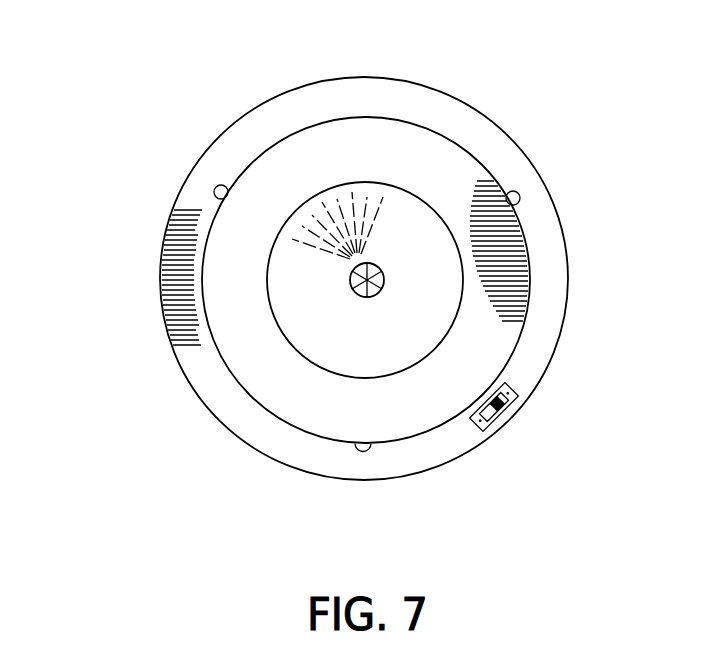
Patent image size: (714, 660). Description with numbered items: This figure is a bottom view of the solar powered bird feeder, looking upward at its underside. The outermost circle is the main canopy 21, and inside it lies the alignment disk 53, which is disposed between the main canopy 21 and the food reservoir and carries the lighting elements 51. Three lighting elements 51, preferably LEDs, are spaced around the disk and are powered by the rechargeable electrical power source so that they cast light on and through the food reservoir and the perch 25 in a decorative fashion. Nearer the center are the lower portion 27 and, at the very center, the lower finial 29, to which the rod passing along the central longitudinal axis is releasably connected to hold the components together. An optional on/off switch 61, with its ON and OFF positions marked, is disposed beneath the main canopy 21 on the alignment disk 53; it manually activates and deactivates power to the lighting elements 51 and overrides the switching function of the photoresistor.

The main canopy 21 is at (477, 108).
The alignment disk 53 is at (302, 105).
The perch 25 is at (229, 297).
The lower portion 27 is at (320, 322).
The lower finial 29 is at (387, 274).
The lighting element 51 is at (212, 186).
The on/off switch 61 is at (506, 421).